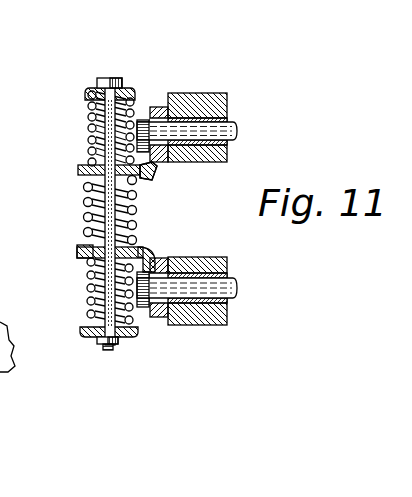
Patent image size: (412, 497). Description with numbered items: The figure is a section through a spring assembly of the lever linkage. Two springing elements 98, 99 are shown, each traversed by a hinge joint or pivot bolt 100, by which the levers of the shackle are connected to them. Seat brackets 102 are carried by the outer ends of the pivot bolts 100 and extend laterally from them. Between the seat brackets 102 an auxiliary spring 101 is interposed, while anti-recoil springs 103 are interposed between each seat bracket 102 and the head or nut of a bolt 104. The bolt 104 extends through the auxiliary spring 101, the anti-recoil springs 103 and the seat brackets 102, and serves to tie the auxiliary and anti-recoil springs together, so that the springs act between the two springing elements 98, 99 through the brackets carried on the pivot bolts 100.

The springing element 98 is at (226, 92).
The springing element 99 is at (215, 323).
The hinge joint 100 is at (236, 125).
The auxiliary spring 101 is at (88, 201).
The seat bracket 102 is at (147, 250).
The anti-recoil spring 103 is at (88, 126).
The bolt 104 is at (103, 351).